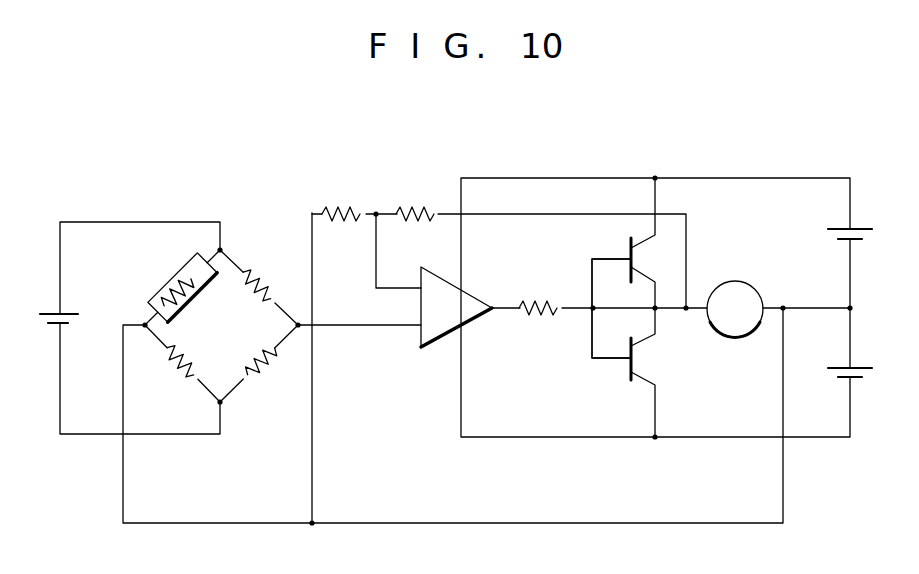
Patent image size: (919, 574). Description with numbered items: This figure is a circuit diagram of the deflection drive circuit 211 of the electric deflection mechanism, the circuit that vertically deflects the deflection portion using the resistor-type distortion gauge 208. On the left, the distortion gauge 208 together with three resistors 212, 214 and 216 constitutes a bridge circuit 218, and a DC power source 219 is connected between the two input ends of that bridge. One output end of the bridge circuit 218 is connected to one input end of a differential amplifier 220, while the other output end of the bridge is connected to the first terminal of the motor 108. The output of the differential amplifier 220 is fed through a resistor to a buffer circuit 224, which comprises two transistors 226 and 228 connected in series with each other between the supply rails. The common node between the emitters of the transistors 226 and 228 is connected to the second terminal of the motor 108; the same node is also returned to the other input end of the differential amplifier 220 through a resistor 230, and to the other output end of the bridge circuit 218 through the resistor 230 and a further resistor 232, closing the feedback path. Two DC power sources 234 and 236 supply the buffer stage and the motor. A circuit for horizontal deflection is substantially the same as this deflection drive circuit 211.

The motor 108 is at (748, 299).
The distortion gauge 208 is at (174, 284).
The deflection drive circuit 211 is at (618, 172).
The resistor 212 is at (261, 271).
The resistor 214 is at (193, 354).
The resistor 216 is at (262, 370).
The bridge circuit 218 is at (221, 362).
The DC power source 219 is at (78, 314).
The differential amplifier 220 is at (469, 312).
The buffer circuit 224 is at (611, 335).
The transistor 226 is at (620, 246).
The transistor 228 is at (641, 357).
The resistor 230 is at (411, 204).
The resistor 232 is at (339, 204).
The DC power source 234 is at (826, 234).
The DC power source 236 is at (870, 375).